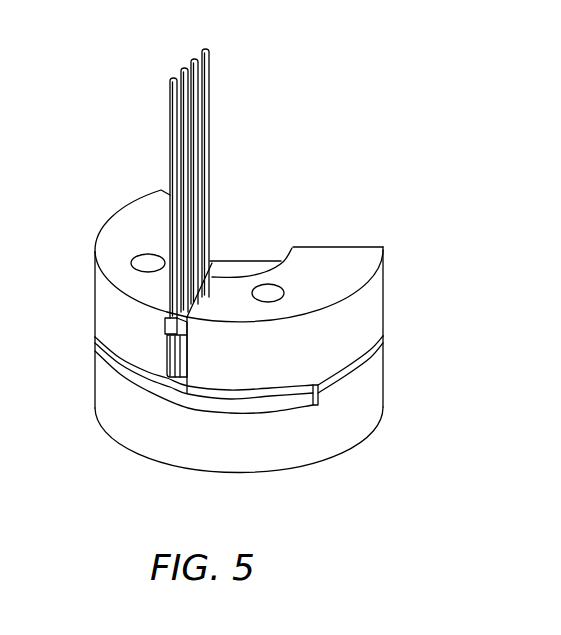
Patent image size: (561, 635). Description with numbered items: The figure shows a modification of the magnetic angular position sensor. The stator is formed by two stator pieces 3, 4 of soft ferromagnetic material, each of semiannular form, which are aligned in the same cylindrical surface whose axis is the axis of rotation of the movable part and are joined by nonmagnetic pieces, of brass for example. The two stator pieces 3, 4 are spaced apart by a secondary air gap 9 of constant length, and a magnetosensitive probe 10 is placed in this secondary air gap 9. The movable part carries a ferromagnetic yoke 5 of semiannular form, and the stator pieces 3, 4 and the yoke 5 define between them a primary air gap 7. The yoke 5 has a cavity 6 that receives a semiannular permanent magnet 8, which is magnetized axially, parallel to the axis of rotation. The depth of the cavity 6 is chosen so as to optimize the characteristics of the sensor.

The stator piece 3 is at (330, 252).
The stator piece 4 is at (120, 218).
The yoke 5 is at (358, 417).
The cavity 6 is at (243, 417).
The primary air gap 7 is at (362, 357).
The permanent magnet 8 is at (293, 405).
The secondary air gap 9 is at (217, 278).
The magnetosensitive probe 10 is at (188, 356).